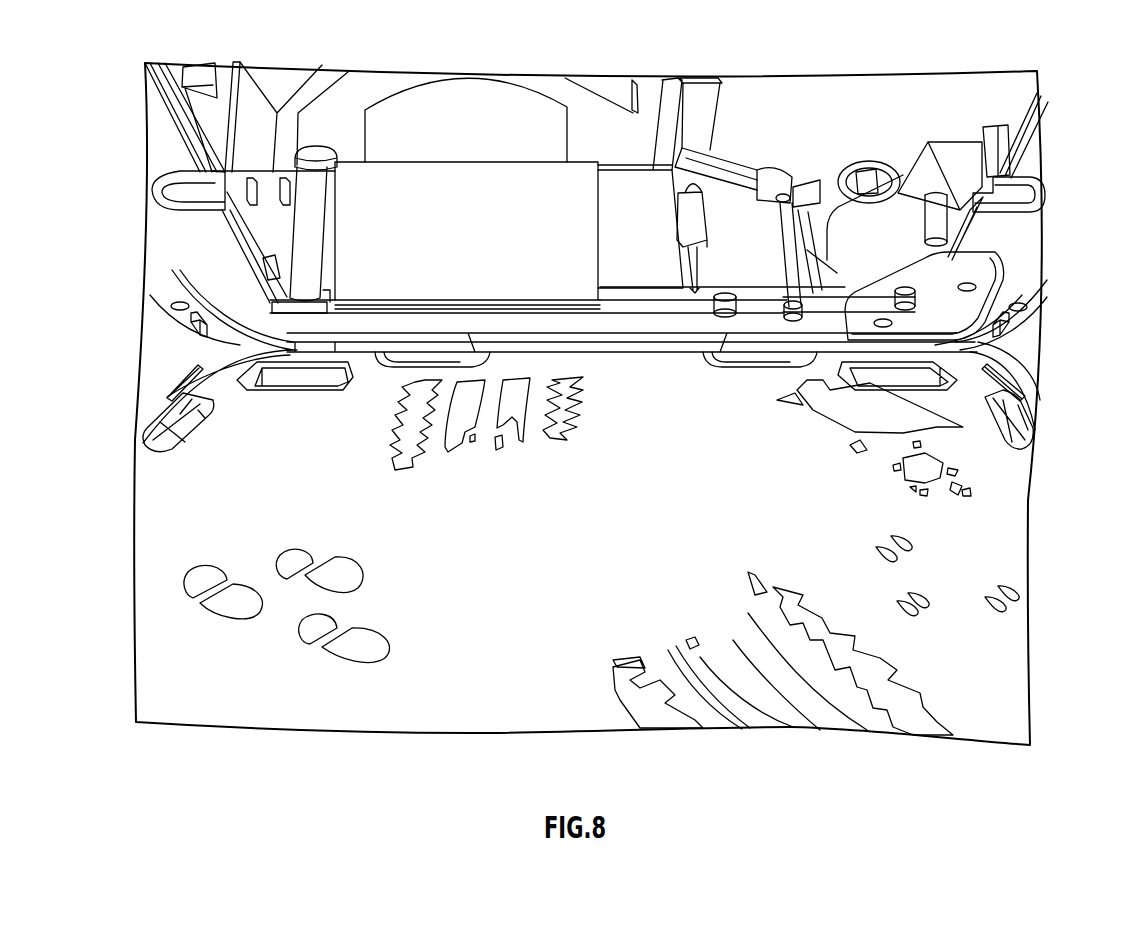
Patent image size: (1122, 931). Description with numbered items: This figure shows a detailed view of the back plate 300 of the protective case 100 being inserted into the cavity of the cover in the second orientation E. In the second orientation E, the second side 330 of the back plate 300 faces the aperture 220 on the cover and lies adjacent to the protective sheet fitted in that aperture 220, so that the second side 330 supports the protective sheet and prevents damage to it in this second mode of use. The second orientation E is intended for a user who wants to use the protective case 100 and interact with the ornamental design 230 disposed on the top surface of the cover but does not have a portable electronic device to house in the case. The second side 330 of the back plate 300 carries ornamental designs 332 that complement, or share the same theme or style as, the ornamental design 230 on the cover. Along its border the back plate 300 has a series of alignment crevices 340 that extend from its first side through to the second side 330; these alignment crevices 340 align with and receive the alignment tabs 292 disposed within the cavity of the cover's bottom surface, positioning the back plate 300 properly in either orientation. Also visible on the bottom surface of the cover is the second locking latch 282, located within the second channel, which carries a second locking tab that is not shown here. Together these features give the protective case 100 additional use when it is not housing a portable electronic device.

The protective case 100 is at (116, 71).
The aperture 220 is at (968, 244).
The ornamental design 230 is at (794, 141).
The second locking latch 282 is at (615, 163).
The alignment tabs 292 is at (190, 317).
The back plate 300 is at (120, 704).
The second side 330 is at (1000, 645).
The ornamental designs 332 is at (383, 649).
The alignment crevices 340 is at (223, 338).
The second orientation E is at (234, 714).